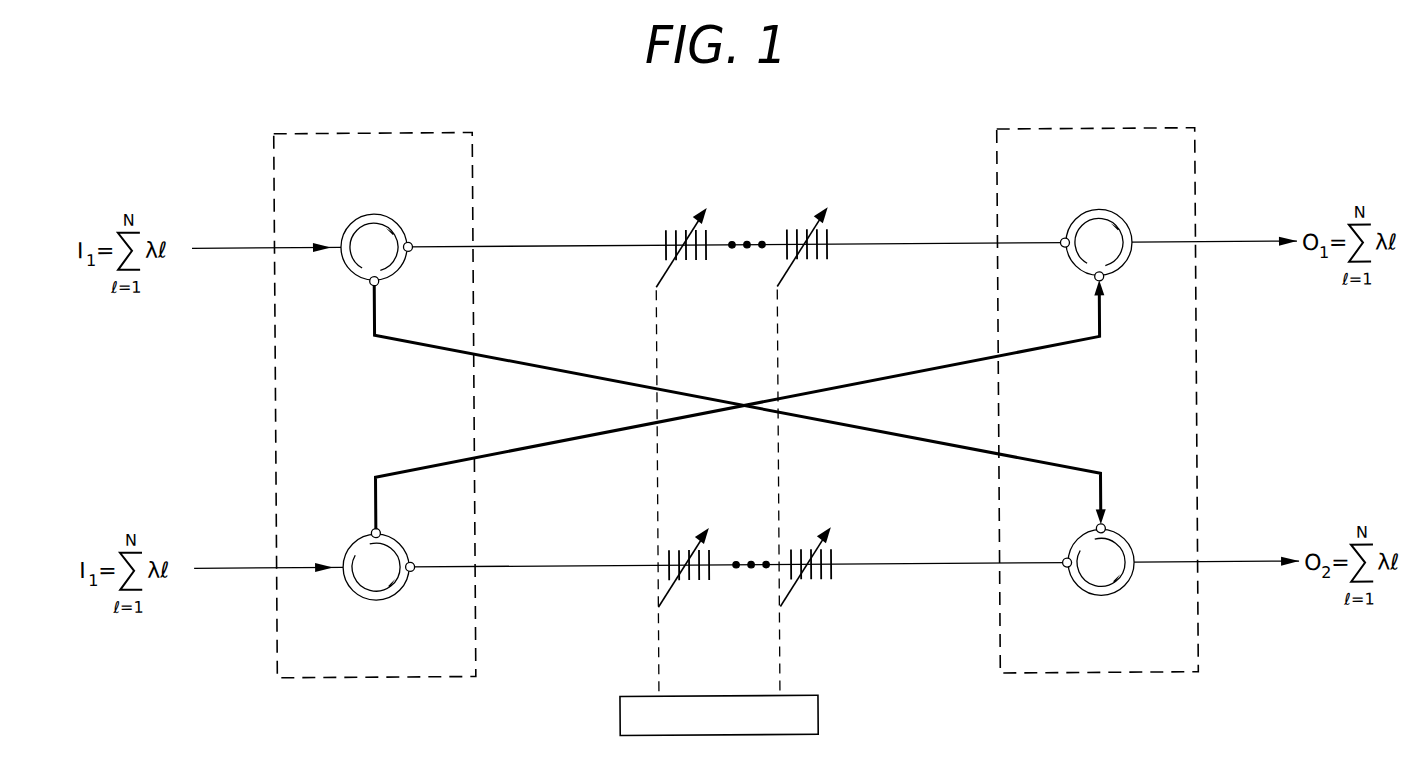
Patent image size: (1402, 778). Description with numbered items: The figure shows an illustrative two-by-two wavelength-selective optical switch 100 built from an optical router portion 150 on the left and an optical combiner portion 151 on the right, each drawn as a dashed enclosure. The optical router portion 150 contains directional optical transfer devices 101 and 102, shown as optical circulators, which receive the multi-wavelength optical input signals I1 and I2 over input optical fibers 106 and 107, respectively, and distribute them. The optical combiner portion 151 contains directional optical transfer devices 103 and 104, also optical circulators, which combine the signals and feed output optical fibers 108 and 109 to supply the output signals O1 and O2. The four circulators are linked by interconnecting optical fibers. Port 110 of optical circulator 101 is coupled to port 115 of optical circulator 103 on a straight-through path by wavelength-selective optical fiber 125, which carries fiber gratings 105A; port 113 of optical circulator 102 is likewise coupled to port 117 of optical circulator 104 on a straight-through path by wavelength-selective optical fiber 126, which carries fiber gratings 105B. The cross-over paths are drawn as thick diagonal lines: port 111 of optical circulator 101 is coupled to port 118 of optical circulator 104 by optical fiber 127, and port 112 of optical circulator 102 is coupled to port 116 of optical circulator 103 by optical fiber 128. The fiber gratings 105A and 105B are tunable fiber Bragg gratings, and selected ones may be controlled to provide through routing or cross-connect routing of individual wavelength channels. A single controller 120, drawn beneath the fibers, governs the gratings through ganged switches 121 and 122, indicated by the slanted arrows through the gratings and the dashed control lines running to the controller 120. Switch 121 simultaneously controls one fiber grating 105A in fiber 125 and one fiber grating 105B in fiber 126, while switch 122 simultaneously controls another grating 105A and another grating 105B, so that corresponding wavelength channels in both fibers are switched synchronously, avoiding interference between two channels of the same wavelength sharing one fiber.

The optical switch 100 is at (226, 419).
The directional optical transfer device 101 is at (377, 212).
The directional optical transfer device 102 is at (373, 598).
The directional optical transfer device 103 is at (1108, 213).
The directional optical transfer device 104 is at (1122, 596).
The fiber gratings 105A is at (666, 230).
The fiber gratings 105B is at (710, 549).
The input optical fiber 106 is at (216, 245).
The input optical fiber 107 is at (214, 565).
The output optical fiber 108 is at (1243, 245).
The output optical fiber 109 is at (1243, 565).
The port 110 is at (413, 241).
The port 111 is at (370, 286).
The port 112 is at (370, 530).
The port 113 is at (413, 561).
The port 115 is at (1061, 241).
The port 116 is at (1094, 285).
The port 117 is at (1062, 572).
The port 118 is at (1110, 526).
The controller 120 is at (818, 716).
The switch 121 is at (658, 288).
The switch 122 is at (779, 288).
The wavelength-selective optical fiber 125 is at (602, 245).
The wavelength-selective optical fiber 126 is at (604, 565).
The optical fiber 127 is at (514, 360).
The optical fiber 128 is at (506, 450).
The optical router portion 150 is at (378, 131).
The optical combiner portion 151 is at (1098, 131).